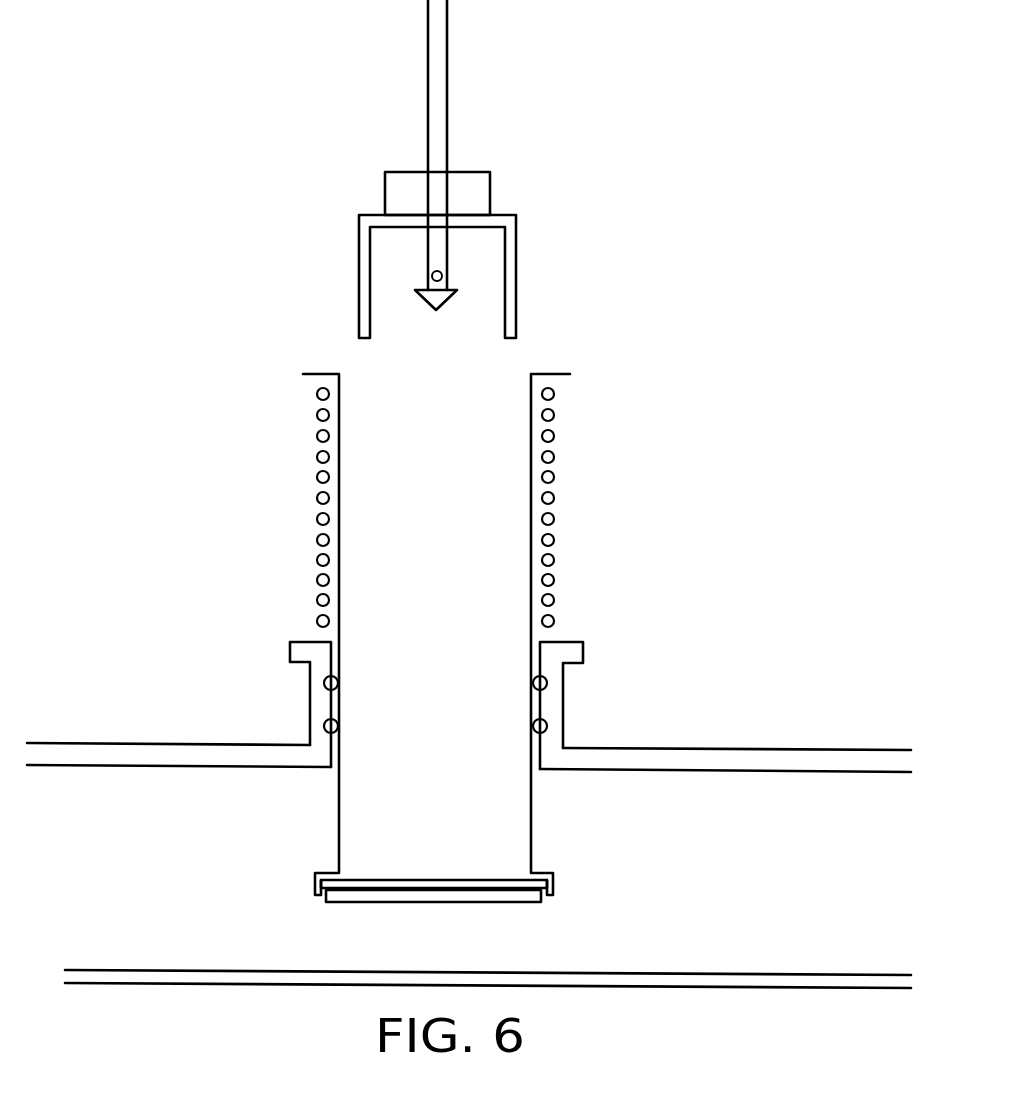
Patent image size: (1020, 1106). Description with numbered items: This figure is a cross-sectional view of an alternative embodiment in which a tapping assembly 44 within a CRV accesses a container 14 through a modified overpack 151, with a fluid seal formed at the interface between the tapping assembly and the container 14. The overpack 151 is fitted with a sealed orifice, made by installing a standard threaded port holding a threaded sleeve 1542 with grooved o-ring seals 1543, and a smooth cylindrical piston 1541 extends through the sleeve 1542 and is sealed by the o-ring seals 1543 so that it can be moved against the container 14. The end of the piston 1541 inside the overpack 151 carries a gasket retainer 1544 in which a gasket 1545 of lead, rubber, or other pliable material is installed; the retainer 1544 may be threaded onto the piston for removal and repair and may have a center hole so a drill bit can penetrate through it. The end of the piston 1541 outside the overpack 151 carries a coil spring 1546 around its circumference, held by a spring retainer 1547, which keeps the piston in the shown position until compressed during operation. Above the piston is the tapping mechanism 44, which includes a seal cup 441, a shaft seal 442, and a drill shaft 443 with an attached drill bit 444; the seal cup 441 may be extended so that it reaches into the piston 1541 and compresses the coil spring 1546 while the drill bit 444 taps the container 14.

The tapping assembly 44 is at (350, 90).
The drill shaft 443 is at (447, 23).
The shaft seal 442 is at (490, 193).
The seal cup 441 is at (516, 282).
The drill bit 444 is at (443, 302).
The piston 1541 is at (338, 838).
The threaded sleeve 1542 is at (563, 697).
The o-ring seals 1543 is at (324, 683).
The gasket retainer 1544 is at (553, 885).
The gasket 1545 is at (390, 905).
The coil spring 1546 is at (554, 519).
The spring retainer 1547 is at (578, 374).
The overpack 151 is at (838, 772).
The container 14 is at (766, 988).